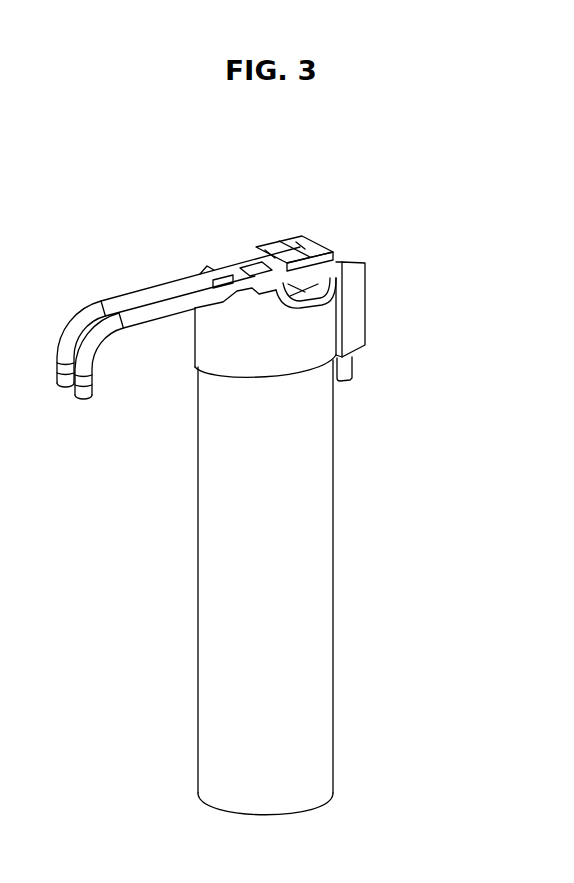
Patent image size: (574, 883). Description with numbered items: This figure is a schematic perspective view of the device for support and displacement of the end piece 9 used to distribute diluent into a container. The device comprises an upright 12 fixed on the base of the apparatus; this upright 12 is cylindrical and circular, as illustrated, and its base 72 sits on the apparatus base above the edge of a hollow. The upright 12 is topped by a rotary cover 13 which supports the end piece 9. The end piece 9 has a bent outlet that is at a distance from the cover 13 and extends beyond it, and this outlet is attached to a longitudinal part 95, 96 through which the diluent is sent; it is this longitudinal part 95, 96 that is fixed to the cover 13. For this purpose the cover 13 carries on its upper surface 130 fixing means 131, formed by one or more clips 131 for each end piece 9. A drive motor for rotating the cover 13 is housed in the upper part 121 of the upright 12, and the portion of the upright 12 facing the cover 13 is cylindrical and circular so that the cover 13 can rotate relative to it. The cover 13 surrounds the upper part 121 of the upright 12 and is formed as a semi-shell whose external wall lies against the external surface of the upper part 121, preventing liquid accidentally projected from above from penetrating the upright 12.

The end piece 9 is at (173, 304).
The upright 12 is at (214, 599).
The rotary cover 13 is at (387, 297).
The base of the upright 72 is at (313, 775).
The longitudinal part 95 is at (175, 292).
The longitudinal part 96 is at (148, 313).
The upper part of the upright 121 is at (315, 404).
The upper surface 130 is at (298, 295).
The fixing means 131 is at (299, 273).